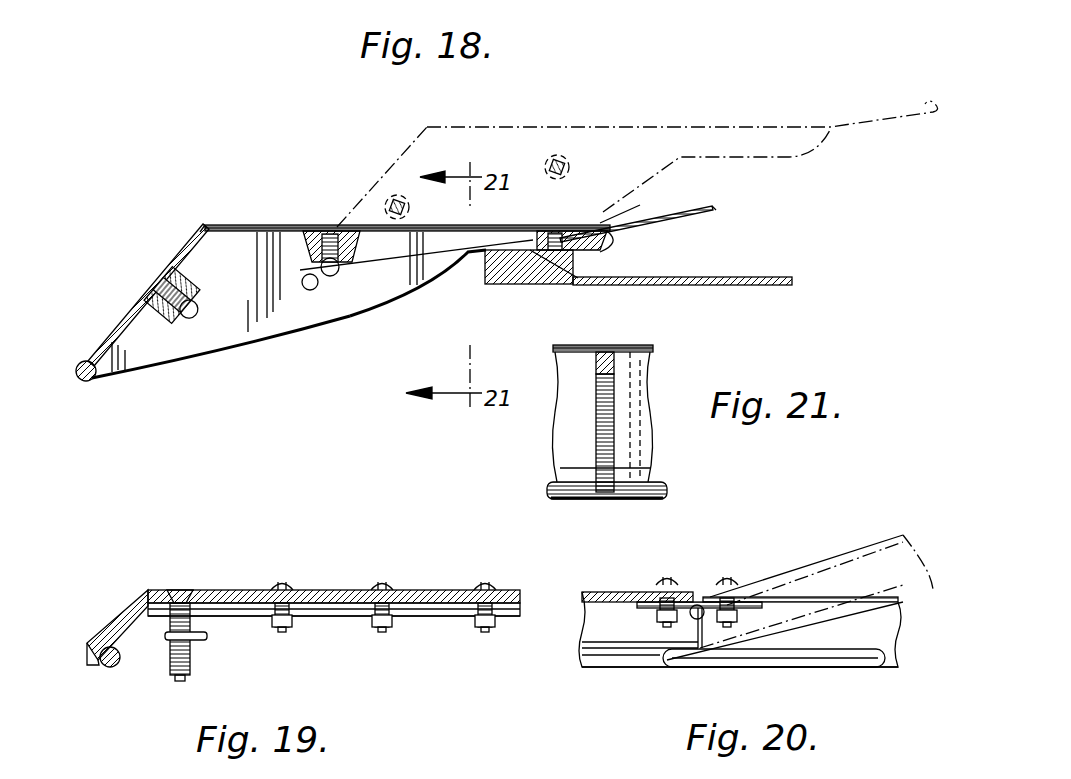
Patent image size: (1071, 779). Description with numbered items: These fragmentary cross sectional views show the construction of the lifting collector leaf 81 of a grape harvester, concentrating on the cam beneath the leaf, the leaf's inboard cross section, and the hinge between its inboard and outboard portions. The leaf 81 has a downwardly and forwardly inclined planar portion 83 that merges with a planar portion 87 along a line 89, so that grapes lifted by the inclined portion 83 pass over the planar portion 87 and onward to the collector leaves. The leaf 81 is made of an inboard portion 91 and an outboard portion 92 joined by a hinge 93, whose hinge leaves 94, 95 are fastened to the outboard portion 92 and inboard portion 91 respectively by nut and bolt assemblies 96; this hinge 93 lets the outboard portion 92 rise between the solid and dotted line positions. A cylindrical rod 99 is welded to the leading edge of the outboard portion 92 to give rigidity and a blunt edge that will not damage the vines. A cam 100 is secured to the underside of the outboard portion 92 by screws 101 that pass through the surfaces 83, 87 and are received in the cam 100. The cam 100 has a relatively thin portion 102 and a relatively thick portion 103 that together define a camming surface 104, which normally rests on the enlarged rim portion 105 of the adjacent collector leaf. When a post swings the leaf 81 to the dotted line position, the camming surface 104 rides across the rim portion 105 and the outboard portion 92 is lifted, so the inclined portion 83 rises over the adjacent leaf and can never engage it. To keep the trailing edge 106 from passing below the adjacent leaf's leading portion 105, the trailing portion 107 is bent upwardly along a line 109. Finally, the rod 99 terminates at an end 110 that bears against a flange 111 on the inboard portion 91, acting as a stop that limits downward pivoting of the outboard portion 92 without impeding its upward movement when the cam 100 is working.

In FIG. 18, the lifting collector leaf 81 is at (246, 225).
In FIG. 21, the lifting collector leaf 81 is at (648, 344).
In FIG. 20, the lifting collector leaf 81 is at (848, 597).
In FIG. 18, the downwardly and forwardly inclined planar portion 83 is at (104, 336).
In FIG. 18, the planar portion 87 is at (274, 226).
In FIG. 21, the planar portion 87 is at (568, 344).
In FIG. 20, the planar portion 87 is at (827, 597).
In FIG. 18, the line 89 is at (196, 224).
In FIG. 19, the inboard portion 91 is at (226, 590).
In FIG. 20, the inboard portion 91 is at (602, 592).
In FIG. 18, the outboard portion 92 is at (214, 224).
In FIG. 20, the outboard portion 92 is at (908, 548).
In FIG. 19, the hinge 93 is at (434, 616).
In FIG. 20, the hinge 93 is at (684, 652).
In FIG. 20, the hinge leaf 94 is at (742, 656).
In FIG. 19, the hinge leaf 95 is at (342, 616).
In FIG. 20, the hinge leaf 95 is at (644, 612).
In FIG. 19, the nut and bolt assemblies 96 is at (366, 576).
In FIG. 20, the nut and bolt assemblies 96 is at (716, 584).
In FIG. 18, the cylindrical rod 99 is at (82, 384).
In FIG. 21, the cylindrical rod 99 is at (558, 498).
In FIG. 20, the cylindrical rod 99 is at (838, 654).
In FIG. 18, the cam 100 is at (552, 108).
In FIG. 21, the cam 100 is at (570, 428).
In FIG. 18, the screws 101 is at (328, 228).
In FIG. 18, the relatively thin portion 102 is at (502, 284).
In FIG. 21, the relatively thin portion 102 is at (606, 344).
In FIG. 18, the relatively thick portion 103 is at (216, 354).
In FIG. 21, the relatively thick portion 103 is at (568, 456).
In FIG. 18, the camming surface 104 is at (392, 302).
In FIG. 21, the camming surface 104 is at (650, 424).
In FIG. 18, the enlarged rim portion 105 is at (568, 262).
In FIG. 18, the trailing edge 106 is at (718, 210).
In FIG. 18, the trailing portion 107 is at (666, 220).
In FIG. 18, the line 109 is at (614, 214).
In FIG. 19, the end 110 is at (108, 668).
In FIG. 20, the end 110 is at (650, 652).
In FIG. 19, the flange 111 is at (88, 650).
In FIG. 20, the flange 111 is at (606, 668).